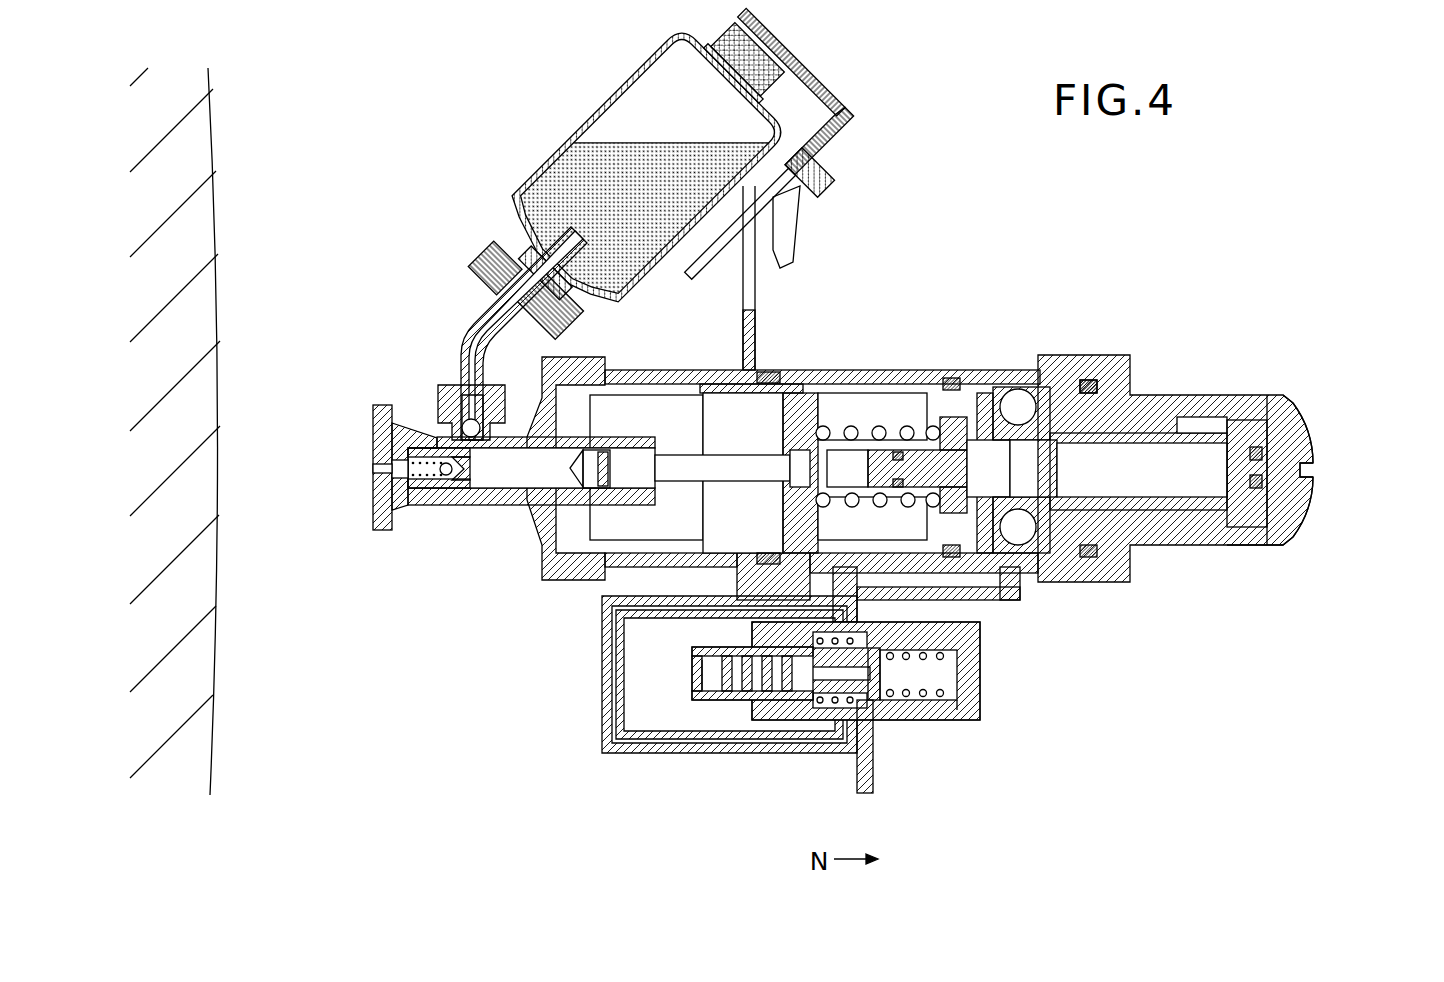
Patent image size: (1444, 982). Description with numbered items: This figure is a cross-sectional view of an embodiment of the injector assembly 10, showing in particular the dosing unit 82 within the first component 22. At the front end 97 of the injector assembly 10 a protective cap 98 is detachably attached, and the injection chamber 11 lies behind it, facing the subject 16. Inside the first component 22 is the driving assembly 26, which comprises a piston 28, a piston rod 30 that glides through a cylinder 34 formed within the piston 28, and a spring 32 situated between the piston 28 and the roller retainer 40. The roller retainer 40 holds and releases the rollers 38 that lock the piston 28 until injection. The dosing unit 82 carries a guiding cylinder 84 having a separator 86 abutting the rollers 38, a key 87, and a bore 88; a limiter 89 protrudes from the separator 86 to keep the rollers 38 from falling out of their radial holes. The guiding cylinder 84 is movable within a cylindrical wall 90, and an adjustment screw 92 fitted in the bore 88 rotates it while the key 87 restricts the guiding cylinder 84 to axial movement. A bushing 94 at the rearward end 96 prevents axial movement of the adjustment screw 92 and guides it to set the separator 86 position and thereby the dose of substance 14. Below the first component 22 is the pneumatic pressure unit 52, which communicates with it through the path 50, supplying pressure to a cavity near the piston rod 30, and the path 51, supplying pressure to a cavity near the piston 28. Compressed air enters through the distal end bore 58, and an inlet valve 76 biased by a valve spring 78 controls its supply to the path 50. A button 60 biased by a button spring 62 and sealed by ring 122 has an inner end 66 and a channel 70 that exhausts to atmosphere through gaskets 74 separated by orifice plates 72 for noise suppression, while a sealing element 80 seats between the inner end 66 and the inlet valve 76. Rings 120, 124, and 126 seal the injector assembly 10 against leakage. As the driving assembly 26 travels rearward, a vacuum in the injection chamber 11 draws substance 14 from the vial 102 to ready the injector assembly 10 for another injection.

The injector assembly 10 is at (1234, 215).
The injection chamber 11 is at (513, 470).
The substance 14 is at (663, 167).
The subject 16 is at (221, 216).
The first component 22 is at (972, 356).
The driving assembly 26 is at (845, 326).
The piston 28 is at (786, 370).
The piston rod 30 is at (936, 450).
The spring 32 is at (943, 510).
The cylinder 34 is at (906, 426).
The roller 38 is at (1022, 540).
The roller retainer 40 is at (1048, 477).
The path 50 is at (985, 584).
The path 51 is at (612, 707).
The pneumatic pressure unit 52 is at (997, 658).
The distal end bore 58 is at (873, 778).
The button 60 is at (690, 690).
The button spring 62 is at (828, 707).
The inner end 66 is at (843, 700).
The channel 70 is at (693, 660).
The orifice plates 72 is at (745, 692).
The gaskets 74 is at (727, 692).
The inlet valve 76 is at (913, 726).
The valve spring 78 is at (948, 688).
The sealing element 80 is at (878, 700).
The dosing unit 82 is at (1300, 384).
The guiding cylinder 84 is at (1195, 507).
The separator 86 is at (1026, 394).
The key 87 is at (1211, 458).
The bore 88 is at (1254, 452).
The limiter 89 is at (1202, 420).
The cylindrical wall 90 is at (1282, 535).
The adjustment screw 92 is at (1307, 490).
The bushing 94 is at (1282, 437).
The rearward end 96 is at (1355, 470).
The front end 97 is at (356, 416).
The protective cap 98 is at (380, 473).
The vial 102 is at (603, 105).
The ring 120 is at (1283, 433).
The ring 122 is at (793, 692).
The ring 124 is at (1089, 382).
The ring 126 is at (766, 553).